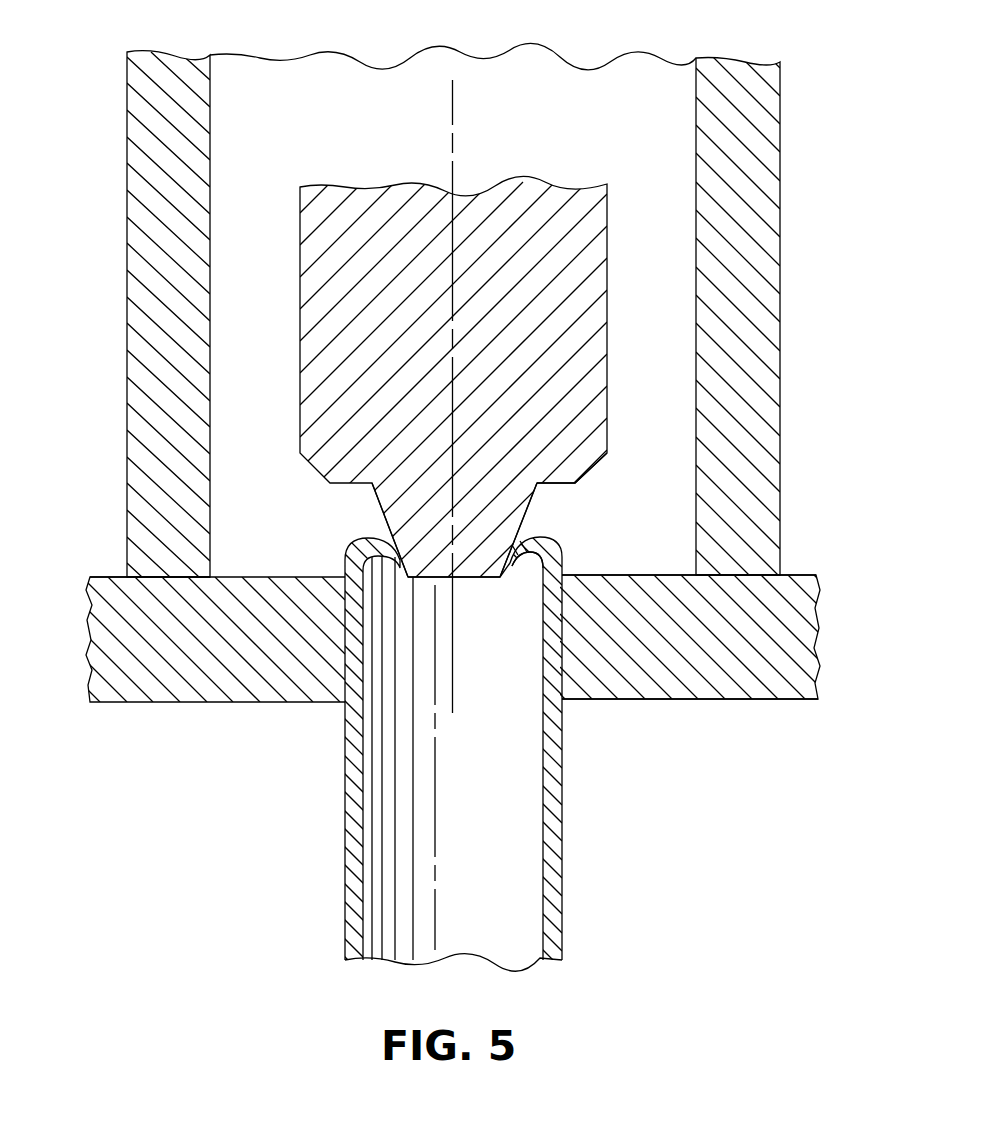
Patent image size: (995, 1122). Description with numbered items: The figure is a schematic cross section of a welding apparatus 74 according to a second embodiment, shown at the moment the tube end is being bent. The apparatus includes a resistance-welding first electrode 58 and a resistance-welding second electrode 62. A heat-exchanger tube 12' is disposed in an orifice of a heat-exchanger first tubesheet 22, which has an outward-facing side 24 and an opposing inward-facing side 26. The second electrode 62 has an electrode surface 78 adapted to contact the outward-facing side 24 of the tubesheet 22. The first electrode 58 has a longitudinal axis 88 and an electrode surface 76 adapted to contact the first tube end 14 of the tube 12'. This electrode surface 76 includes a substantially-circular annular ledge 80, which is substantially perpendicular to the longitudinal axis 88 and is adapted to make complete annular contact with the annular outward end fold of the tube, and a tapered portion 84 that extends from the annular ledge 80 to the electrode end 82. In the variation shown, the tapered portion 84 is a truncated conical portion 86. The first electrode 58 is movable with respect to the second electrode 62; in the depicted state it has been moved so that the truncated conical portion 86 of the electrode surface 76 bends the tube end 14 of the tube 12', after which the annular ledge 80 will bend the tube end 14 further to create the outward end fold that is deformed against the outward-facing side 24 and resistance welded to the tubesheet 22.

The welding apparatus 74 is at (86, 106).
The second electrode 62 is at (787, 236).
The first electrode 58 is at (295, 211).
The longitudinal axis 88 is at (452, 93).
The tapered portion 84 is at (376, 503).
The electrode surface 76 is at (538, 509).
The annular ledge 80 is at (560, 486).
The conical portion 86 is at (527, 522).
The electrode end 82 is at (468, 580).
The first tubesheet 22 is at (160, 710).
The outward-facing side 24 is at (788, 575).
The inward-facing side 26 is at (788, 699).
The electrode surface 78 is at (147, 583).
The heat-exchanger tube 12' is at (484, 758).
The first tube end 14 is at (510, 566).